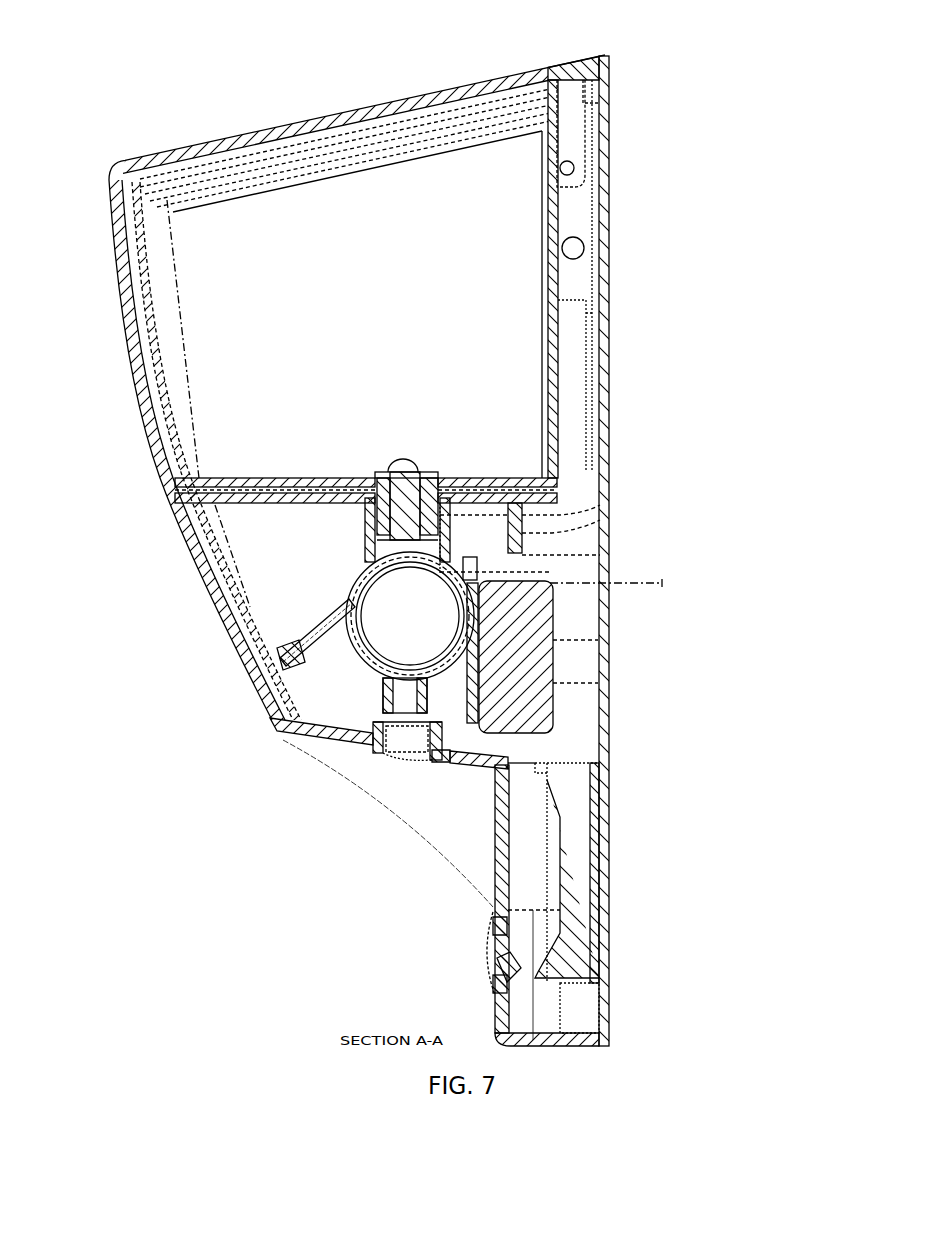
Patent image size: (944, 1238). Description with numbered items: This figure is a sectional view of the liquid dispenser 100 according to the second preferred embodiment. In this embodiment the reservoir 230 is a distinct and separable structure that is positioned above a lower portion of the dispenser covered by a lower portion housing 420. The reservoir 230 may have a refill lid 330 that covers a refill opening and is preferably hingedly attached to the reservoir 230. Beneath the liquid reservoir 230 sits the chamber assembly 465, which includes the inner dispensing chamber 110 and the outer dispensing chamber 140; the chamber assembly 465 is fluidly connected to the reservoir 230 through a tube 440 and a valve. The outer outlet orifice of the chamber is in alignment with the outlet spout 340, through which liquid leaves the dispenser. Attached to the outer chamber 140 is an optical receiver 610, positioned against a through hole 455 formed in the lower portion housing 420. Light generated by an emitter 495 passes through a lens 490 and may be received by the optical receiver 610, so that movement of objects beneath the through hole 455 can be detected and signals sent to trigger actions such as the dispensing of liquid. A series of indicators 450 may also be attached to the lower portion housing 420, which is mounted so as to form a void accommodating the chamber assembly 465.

The refill lid 330 is at (342, 117).
The reservoir 230 is at (230, 322).
The chamber assembly 465 is at (322, 592).
The optical receiver 610 is at (287, 658).
The lower portion housing 420 is at (264, 715).
The outer dispensing chamber 140 is at (368, 675).
The through hole 455 is at (365, 738).
The outlet spout 340 is at (407, 732).
The lens 490 is at (487, 945).
The emitter 495 is at (503, 959).
The indicators 450 is at (413, 515).
The tube 440 is at (417, 545).
The inner dispensing chamber 110 is at (435, 655).
The liquid dispenser 100 is at (768, 1061).